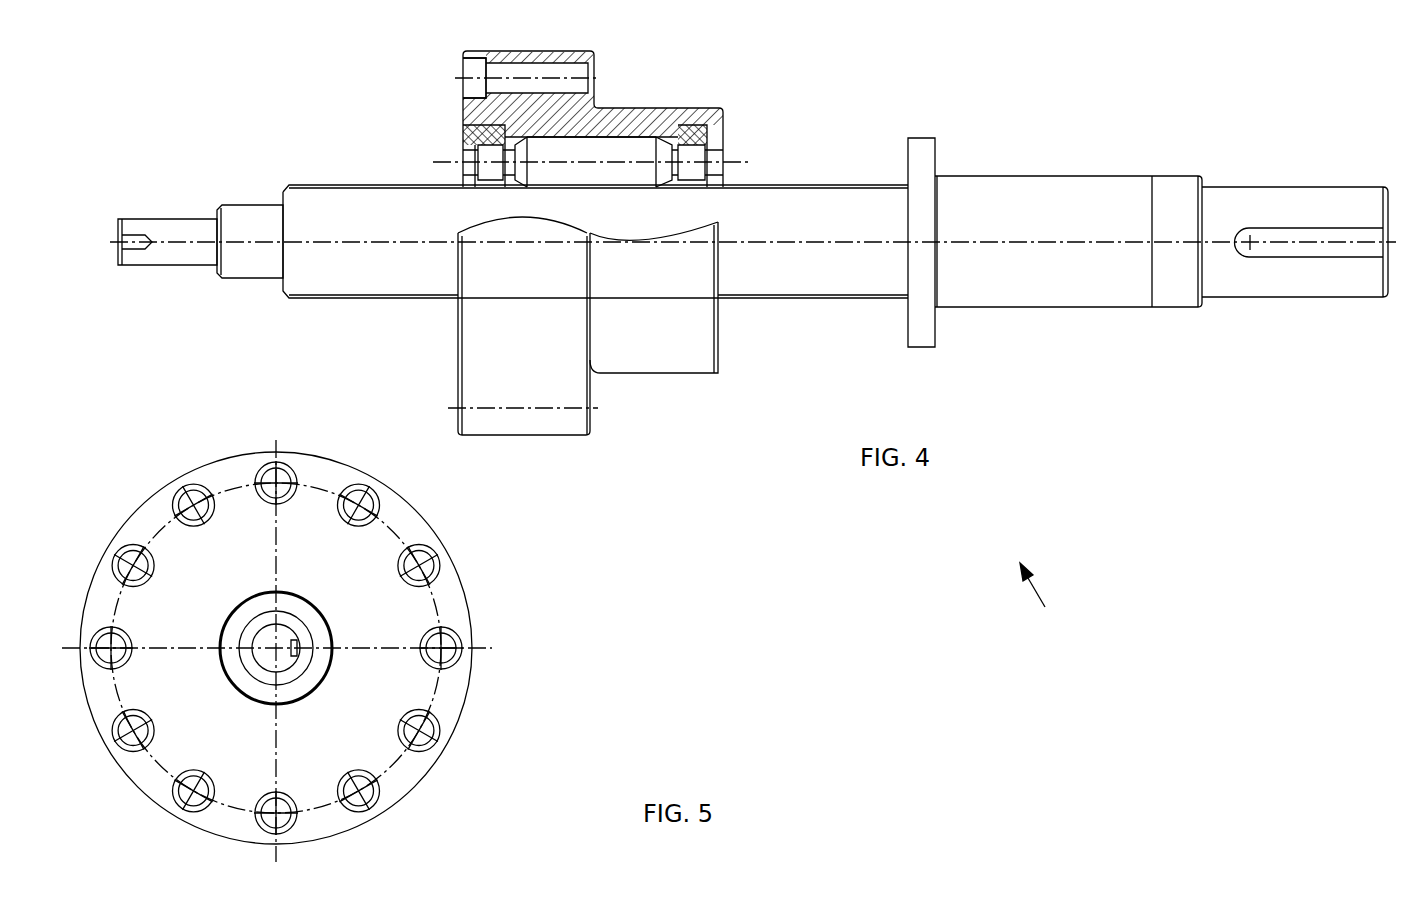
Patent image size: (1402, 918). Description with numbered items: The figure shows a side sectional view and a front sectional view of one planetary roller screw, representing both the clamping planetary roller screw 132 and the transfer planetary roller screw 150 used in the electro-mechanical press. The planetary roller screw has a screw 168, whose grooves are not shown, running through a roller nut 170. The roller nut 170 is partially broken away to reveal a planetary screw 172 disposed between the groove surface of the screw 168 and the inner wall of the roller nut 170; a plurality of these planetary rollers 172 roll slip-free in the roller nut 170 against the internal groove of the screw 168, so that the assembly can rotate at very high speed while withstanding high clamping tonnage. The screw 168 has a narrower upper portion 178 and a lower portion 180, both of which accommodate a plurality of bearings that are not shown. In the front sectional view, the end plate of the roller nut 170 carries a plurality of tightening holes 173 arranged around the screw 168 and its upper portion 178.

In FIG. 4, the screw 168 is at (741, 186).
In FIG. 5, the screw 168 is at (326, 618).
In FIG. 4, the roller nut 170 is at (653, 375).
In FIG. 5, the roller nut 170 is at (430, 526).
In FIG. 4, the planetary screw 172 is at (590, 150).
In FIG. 4, the tightening holes 173 is at (463, 90).
In FIG. 5, the tightening holes 173 is at (279, 462).
In FIG. 4, the upper portion 178 is at (182, 262).
In FIG. 5, the upper portion 178 is at (302, 677).
In FIG. 4, the lower portion 180 is at (1282, 186).
In FIG. 4, the clamping planetary roller screw 132 is at (1102, 610).
In FIG. 4, the transfer planetary roller screw 150 is at (1106, 634).